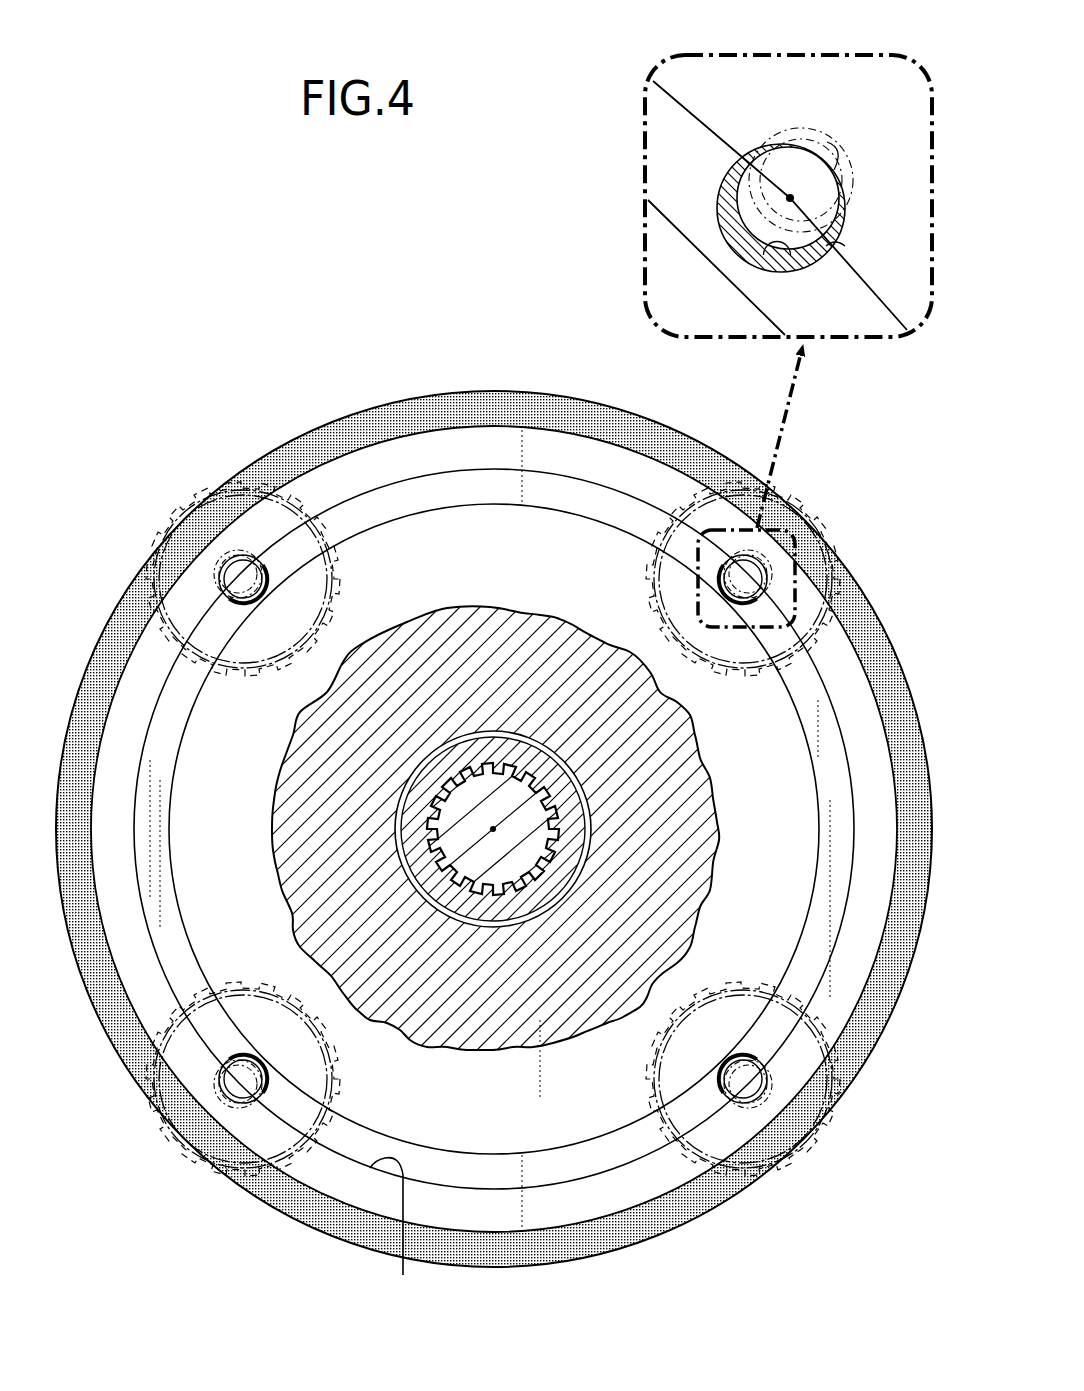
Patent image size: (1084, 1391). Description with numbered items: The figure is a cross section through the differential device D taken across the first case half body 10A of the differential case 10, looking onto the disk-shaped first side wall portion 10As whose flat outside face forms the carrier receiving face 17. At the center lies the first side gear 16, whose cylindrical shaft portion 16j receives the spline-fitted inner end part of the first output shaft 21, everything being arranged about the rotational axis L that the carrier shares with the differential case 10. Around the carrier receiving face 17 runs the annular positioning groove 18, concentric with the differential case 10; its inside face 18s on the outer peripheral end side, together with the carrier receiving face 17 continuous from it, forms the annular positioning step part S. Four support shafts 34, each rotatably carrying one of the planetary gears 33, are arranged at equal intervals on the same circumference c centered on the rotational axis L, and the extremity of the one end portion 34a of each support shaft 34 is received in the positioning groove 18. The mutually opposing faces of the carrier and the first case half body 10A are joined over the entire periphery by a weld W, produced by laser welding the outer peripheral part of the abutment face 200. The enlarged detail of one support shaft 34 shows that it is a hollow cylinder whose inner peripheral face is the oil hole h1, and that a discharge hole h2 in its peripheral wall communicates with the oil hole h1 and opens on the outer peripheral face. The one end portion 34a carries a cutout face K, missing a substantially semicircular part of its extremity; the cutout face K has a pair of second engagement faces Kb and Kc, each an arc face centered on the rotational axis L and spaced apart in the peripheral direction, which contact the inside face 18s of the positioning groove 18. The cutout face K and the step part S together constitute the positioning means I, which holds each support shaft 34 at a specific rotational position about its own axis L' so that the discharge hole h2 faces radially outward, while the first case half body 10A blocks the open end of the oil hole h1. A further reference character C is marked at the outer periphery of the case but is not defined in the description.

The differential case 10 is at (547, 391).
The first case half body 10A is at (592, 1263).
The first side wall portion 10As is at (692, 818).
The first side gear 16 is at (445, 740).
The shaft portion 16j is at (430, 806).
The carrier receiving face 17 is at (507, 569).
The positioning groove 18 is at (543, 500).
The inside face of positioning groove 18s is at (652, 92).
The first output shaft 21 is at (517, 790).
The planetary gear 33 is at (165, 515).
The support shaft 34 is at (258, 598).
The one end portion of support shaft 34a is at (265, 1062).
The abutment face 200 is at (694, 70).
The cutout face K is at (240, 556).
The second engagement face Kb is at (750, 143).
The second engagement face Kc is at (838, 246).
The oil hole h1 is at (762, 242).
The discharge hole h2 is at (842, 140).
The rotational axis L is at (569, 863).
The self axis of support shaft L' is at (848, 180).
The positioning means I is at (221, 583).
The positioning step part S is at (501, 1187).
The differential device D is at (326, 420).
The weld W is at (416, 412).
The circumference c is at (906, 322).
The outer contour C is at (324, 1234).